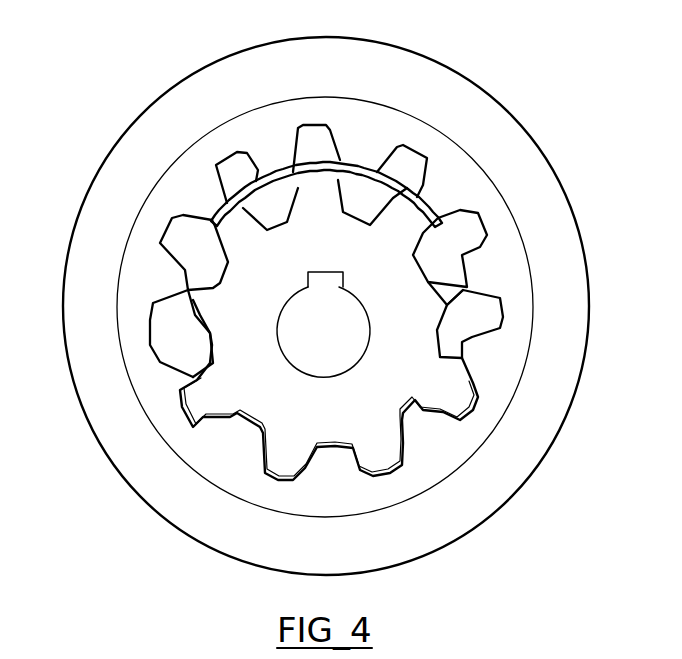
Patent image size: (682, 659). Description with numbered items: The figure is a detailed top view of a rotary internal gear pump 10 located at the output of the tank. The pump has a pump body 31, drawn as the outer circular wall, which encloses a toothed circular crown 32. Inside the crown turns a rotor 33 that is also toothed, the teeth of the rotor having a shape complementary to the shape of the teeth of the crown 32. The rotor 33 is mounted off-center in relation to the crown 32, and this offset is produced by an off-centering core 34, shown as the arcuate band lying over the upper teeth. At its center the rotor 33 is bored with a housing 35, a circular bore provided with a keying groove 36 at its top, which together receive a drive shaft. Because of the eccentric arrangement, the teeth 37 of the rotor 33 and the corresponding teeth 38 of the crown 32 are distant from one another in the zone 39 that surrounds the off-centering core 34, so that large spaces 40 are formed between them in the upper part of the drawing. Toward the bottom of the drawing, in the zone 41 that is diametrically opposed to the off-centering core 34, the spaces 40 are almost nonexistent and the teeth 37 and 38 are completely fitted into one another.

The rotary internal gear pump 10 is at (340, 293).
The pump body 31 is at (332, 306).
The toothed circular crown 32 is at (367, 307).
The rotor 33 is at (485, 251).
The off-centering core 34 is at (326, 119).
The housing 35 is at (448, 344).
The keying groove 36 is at (393, 164).
The teeth of rotor 37 is at (124, 358).
The teeth of crown 38 is at (109, 324).
The zone 39 is at (286, 91).
The spaces 40 is at (171, 221).
The zone 41 is at (329, 445).